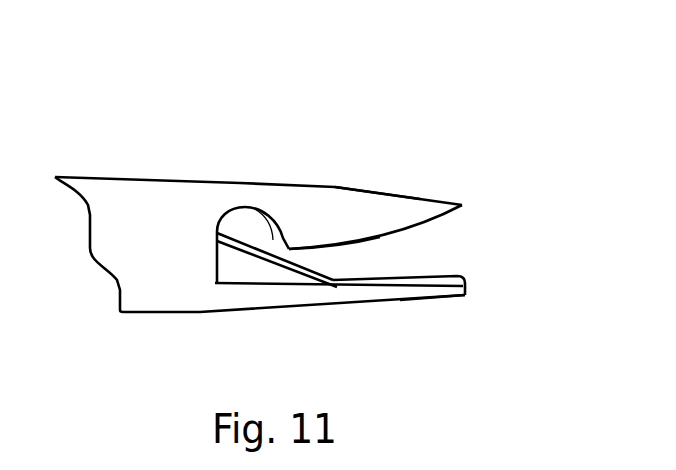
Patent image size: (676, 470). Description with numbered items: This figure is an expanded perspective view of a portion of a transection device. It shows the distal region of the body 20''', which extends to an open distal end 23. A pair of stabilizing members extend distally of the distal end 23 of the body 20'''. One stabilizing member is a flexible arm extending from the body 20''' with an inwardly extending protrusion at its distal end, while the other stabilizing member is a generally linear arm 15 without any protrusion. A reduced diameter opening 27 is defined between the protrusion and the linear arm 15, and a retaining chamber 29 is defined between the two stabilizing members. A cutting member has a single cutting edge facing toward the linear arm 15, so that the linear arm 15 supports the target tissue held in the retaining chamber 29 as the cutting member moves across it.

The body 20''' is at (260, 168).
The retaining chamber 29 is at (245, 222).
The reduced diameter opening 27 is at (448, 249).
The distal end 23 is at (218, 262).
The linear arm 15 is at (410, 295).